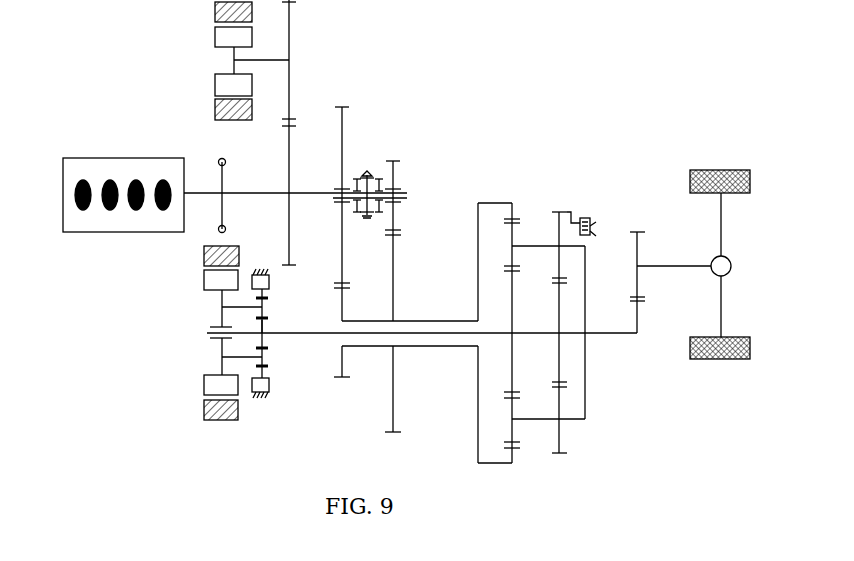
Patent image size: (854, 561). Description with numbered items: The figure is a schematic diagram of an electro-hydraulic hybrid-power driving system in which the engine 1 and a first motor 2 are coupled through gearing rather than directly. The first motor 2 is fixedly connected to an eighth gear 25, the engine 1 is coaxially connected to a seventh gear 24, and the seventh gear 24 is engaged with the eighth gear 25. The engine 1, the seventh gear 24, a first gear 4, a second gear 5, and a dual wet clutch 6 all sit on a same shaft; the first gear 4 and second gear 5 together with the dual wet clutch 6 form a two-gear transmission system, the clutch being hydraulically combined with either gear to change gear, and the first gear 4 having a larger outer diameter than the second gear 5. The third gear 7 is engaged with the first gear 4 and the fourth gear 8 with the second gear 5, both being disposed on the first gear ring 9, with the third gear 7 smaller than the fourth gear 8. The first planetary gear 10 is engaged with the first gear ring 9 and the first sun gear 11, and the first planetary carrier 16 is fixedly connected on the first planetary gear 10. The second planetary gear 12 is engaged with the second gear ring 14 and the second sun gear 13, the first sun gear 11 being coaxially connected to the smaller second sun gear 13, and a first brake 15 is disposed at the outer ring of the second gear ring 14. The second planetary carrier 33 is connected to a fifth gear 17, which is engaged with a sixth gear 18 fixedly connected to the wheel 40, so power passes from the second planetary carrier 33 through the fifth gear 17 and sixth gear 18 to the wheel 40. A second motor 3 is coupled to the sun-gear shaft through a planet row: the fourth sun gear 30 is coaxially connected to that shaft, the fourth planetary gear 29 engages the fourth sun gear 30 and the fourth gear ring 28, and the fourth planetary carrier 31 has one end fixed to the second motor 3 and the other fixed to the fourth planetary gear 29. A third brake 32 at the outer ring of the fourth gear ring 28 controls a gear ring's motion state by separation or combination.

The engine 1 is at (62, 232).
The first motor 2 is at (214, 22).
The second motor 3 is at (204, 375).
The first gear 4 is at (342, 131).
The second gear 5 is at (393, 173).
The dual wet clutch 6 is at (367, 174).
The third gear 7 is at (342, 305).
The fourth gear 8 is at (393, 280).
The first gear ring 9 is at (508, 205).
The first planetary gear 10 is at (512, 238).
The first sun gear 11 is at (512, 318).
The second planetary gear 12 is at (559, 254).
The second sun gear 13 is at (559, 303).
The second gear ring 14 is at (563, 202).
The first brake 15 is at (591, 226).
The first planetary carrier 16 is at (549, 245).
The fifth gear 17 is at (638, 325).
The sixth gear 18 is at (638, 255).
The seventh gear 24 is at (289, 170).
The eighth gear 25 is at (289, 51).
The fourth gear ring 28 is at (265, 292).
The fourth planetary gear 29 is at (265, 310).
The fourth sun gear 30 is at (265, 327).
The fourth planetary carrier 31 is at (256, 310).
The third brake 32 is at (268, 272).
The second planetary carrier 33 is at (585, 277).
The wheel 40 is at (748, 172).